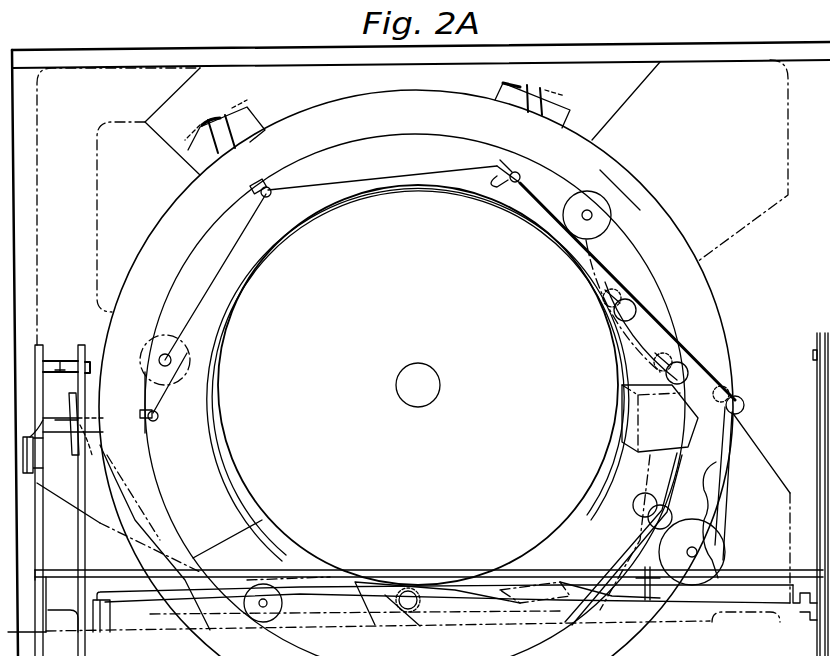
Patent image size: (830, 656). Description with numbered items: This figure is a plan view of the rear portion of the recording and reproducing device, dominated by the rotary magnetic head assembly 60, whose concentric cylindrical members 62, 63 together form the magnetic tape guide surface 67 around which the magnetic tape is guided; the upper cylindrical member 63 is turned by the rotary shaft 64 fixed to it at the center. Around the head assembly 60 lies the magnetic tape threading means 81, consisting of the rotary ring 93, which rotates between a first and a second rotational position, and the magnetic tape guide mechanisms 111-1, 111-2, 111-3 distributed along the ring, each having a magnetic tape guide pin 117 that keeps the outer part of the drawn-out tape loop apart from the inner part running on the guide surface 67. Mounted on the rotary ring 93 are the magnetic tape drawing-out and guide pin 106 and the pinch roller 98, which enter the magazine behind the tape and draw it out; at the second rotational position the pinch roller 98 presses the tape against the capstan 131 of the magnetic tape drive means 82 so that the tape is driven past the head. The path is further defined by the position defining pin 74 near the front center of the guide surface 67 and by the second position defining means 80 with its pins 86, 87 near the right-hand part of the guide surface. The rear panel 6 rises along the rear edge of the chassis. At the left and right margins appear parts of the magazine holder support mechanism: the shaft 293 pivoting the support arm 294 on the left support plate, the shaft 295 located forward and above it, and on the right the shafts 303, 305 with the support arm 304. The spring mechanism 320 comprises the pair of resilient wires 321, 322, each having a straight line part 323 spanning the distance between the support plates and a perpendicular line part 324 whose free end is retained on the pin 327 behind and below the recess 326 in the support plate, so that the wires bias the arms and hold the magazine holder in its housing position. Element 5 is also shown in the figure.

The frame top plate 5 is at (128, 65).
The rear panel 6 is at (728, 44).
The rotary ring 93 is at (632, 174).
The upper cylindrical member 63 is at (595, 476).
The rotary shaft 64 is at (413, 364).
The magnetic tape guide surface 67 is at (292, 226).
The magnetic tape guide mechanism 111-1 is at (95, 342).
The magnetic tape guide mechanism 111-2 is at (303, 100).
The magnetic tape guide mechanism 111-3 is at (620, 96).
The magnetic tape guide pin 117 is at (272, 190).
The lower cylindrical member 62 is at (213, 333).
The position defining pin 86 is at (633, 297).
The position defining pin 87 is at (664, 374).
The second position defining means 80 is at (644, 359).
The shaft 303 is at (813, 354).
The support arm 304 is at (820, 477).
The resilient wire 322 is at (484, 570).
The pinch roller 98 is at (722, 546).
The capstan 131 is at (632, 511).
The magnetic tape drive means 82 is at (623, 539).
The magnetic tape drawing-out and guide pin 106 is at (660, 592).
The recess 326 is at (42, 570).
The spring mechanism 320 is at (455, 561).
The resilient wire 321 is at (373, 570).
The straight line part 323 is at (537, 576).
The position defining pin 74 is at (400, 608).
The shaft 295 is at (60, 612).
The shaft 305 is at (796, 599).
The shaft 293 is at (60, 372).
The pin 327 is at (73, 424).
The support arm 294 is at (98, 445).
The line part 324 is at (42, 486).
The magnetic tape threading means 81 is at (108, 491).
The rotary magnetic head assembly 60 is at (268, 554).